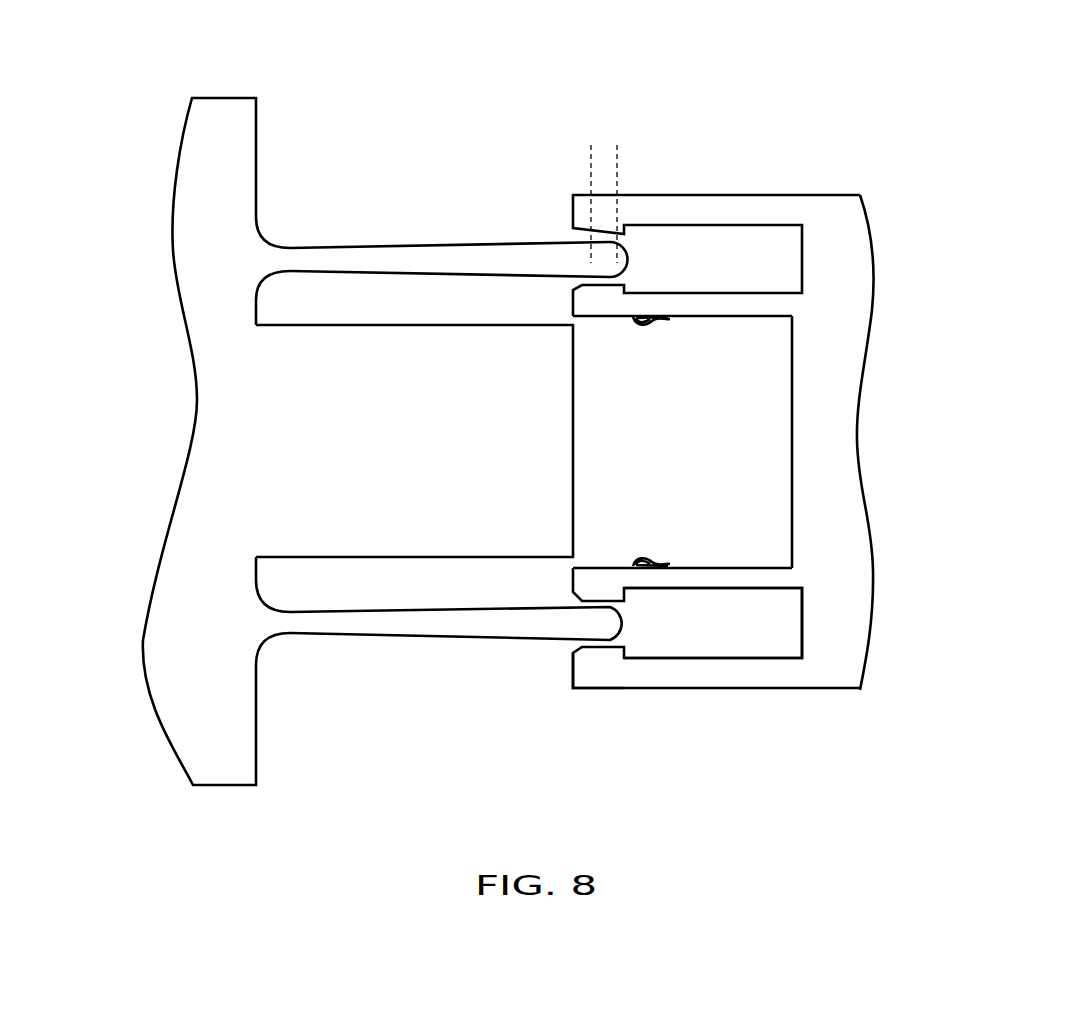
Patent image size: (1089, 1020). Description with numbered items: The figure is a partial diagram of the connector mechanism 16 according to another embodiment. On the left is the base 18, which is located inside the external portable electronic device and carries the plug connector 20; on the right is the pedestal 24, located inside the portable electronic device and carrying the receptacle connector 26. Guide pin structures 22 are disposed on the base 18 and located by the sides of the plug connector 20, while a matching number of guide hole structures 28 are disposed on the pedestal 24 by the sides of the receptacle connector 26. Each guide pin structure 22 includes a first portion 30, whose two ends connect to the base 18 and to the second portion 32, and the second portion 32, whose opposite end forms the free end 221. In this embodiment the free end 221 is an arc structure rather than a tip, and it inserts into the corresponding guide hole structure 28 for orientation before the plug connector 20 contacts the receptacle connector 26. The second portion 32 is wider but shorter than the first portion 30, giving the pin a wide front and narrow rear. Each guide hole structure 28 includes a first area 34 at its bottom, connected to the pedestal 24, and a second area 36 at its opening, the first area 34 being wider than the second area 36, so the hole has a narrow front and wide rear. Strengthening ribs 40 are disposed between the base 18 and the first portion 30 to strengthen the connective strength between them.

The connector mechanism 16 is at (962, 142).
The base 18 is at (218, 423).
The plug connector 20 is at (557, 479).
The guide pin structure 22 is at (476, 369).
The free end 221 is at (625, 260).
The pedestal 24 is at (818, 411).
The receptacle connector 26 is at (762, 469).
The guide hole structure 28 is at (716, 482).
The first portion 30 is at (591, 168).
The second portion 32 is at (603, 191).
The first area 34 is at (723, 678).
The second area 36 is at (603, 721).
The strengthening rib 40 is at (262, 252).